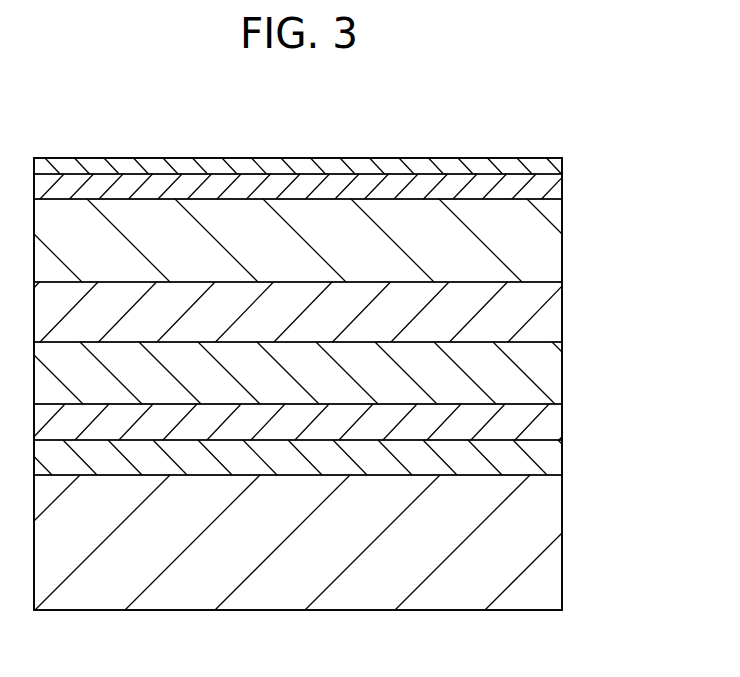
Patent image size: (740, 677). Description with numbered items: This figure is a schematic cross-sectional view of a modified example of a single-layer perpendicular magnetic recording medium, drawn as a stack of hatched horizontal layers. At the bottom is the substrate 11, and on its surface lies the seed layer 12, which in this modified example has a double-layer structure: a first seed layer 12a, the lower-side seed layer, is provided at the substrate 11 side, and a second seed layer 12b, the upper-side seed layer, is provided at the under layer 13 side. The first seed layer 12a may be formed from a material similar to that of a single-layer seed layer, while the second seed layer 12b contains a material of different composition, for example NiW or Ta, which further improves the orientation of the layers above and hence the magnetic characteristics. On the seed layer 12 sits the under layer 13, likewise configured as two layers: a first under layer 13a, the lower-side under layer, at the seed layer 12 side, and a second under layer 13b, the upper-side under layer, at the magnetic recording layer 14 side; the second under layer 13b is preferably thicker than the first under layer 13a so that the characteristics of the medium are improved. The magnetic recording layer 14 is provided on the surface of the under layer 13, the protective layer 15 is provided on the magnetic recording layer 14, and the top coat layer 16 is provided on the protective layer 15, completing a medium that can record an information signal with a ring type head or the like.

The substrate 11 is at (552, 542).
The seed layer 12 is at (365, 439).
The first seed layer 12a is at (553, 458).
The second seed layer 12b is at (553, 422).
The under layer 13 is at (364, 343).
The first under layer 13a is at (553, 375).
The second under layer 13b is at (553, 312).
The magnetic recording layer 14 is at (553, 238).
The protective layer 15 is at (562, 183).
The top coat layer 16 is at (562, 165).